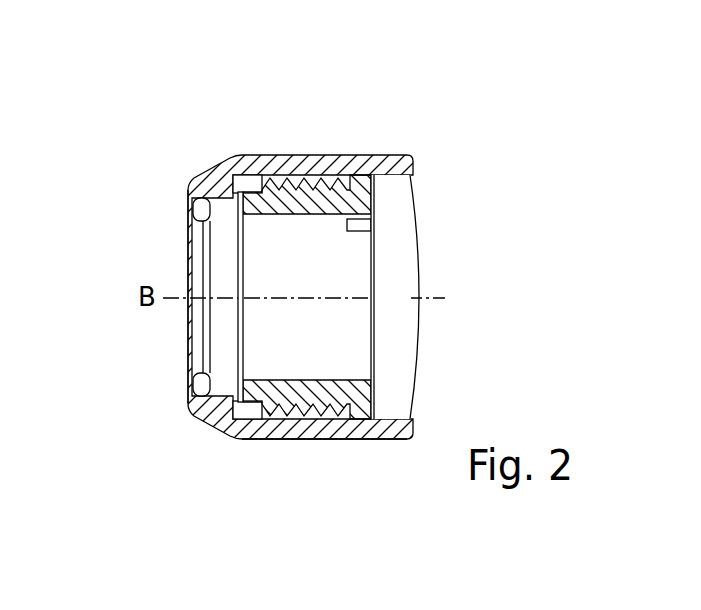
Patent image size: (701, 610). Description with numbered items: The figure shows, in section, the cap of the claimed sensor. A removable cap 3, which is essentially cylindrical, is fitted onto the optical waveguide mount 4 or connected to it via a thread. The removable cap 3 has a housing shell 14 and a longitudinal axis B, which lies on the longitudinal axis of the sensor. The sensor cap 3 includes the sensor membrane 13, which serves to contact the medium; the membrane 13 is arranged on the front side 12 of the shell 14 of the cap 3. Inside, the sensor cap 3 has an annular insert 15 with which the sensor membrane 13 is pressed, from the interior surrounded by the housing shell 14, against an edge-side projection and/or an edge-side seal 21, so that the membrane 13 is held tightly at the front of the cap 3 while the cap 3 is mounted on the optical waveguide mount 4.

The removable cap 3 is at (372, 128).
The optical waveguide mount 4 is at (392, 272).
The front side 12 is at (186, 258).
The sensor membrane 13 is at (202, 332).
The housing shell 14 is at (356, 425).
The annular insert 15 is at (285, 400).
The edge-side seal 21 is at (193, 380).